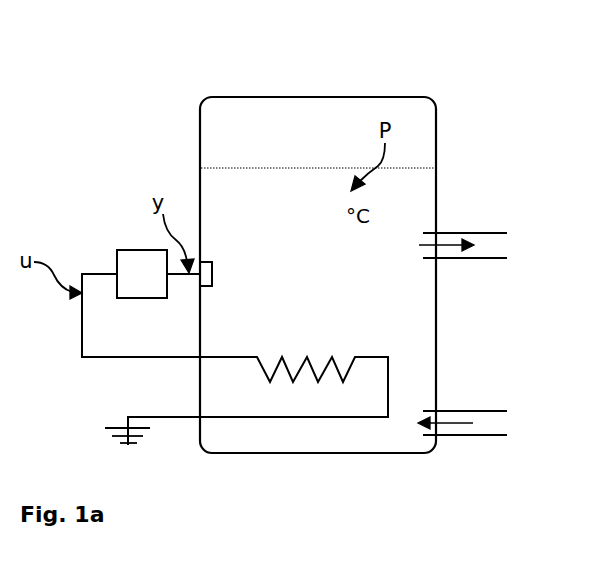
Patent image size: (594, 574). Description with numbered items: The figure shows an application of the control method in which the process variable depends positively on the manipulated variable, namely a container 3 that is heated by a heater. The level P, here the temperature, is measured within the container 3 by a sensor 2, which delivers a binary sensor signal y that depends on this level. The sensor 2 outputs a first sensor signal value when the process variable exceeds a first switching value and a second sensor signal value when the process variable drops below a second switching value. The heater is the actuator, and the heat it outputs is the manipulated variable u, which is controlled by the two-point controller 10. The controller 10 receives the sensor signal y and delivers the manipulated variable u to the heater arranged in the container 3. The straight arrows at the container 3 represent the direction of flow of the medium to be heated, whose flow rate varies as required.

The sensor 2 is at (207, 262).
The container 3 is at (290, 97).
The two-point controller 10 is at (130, 252).